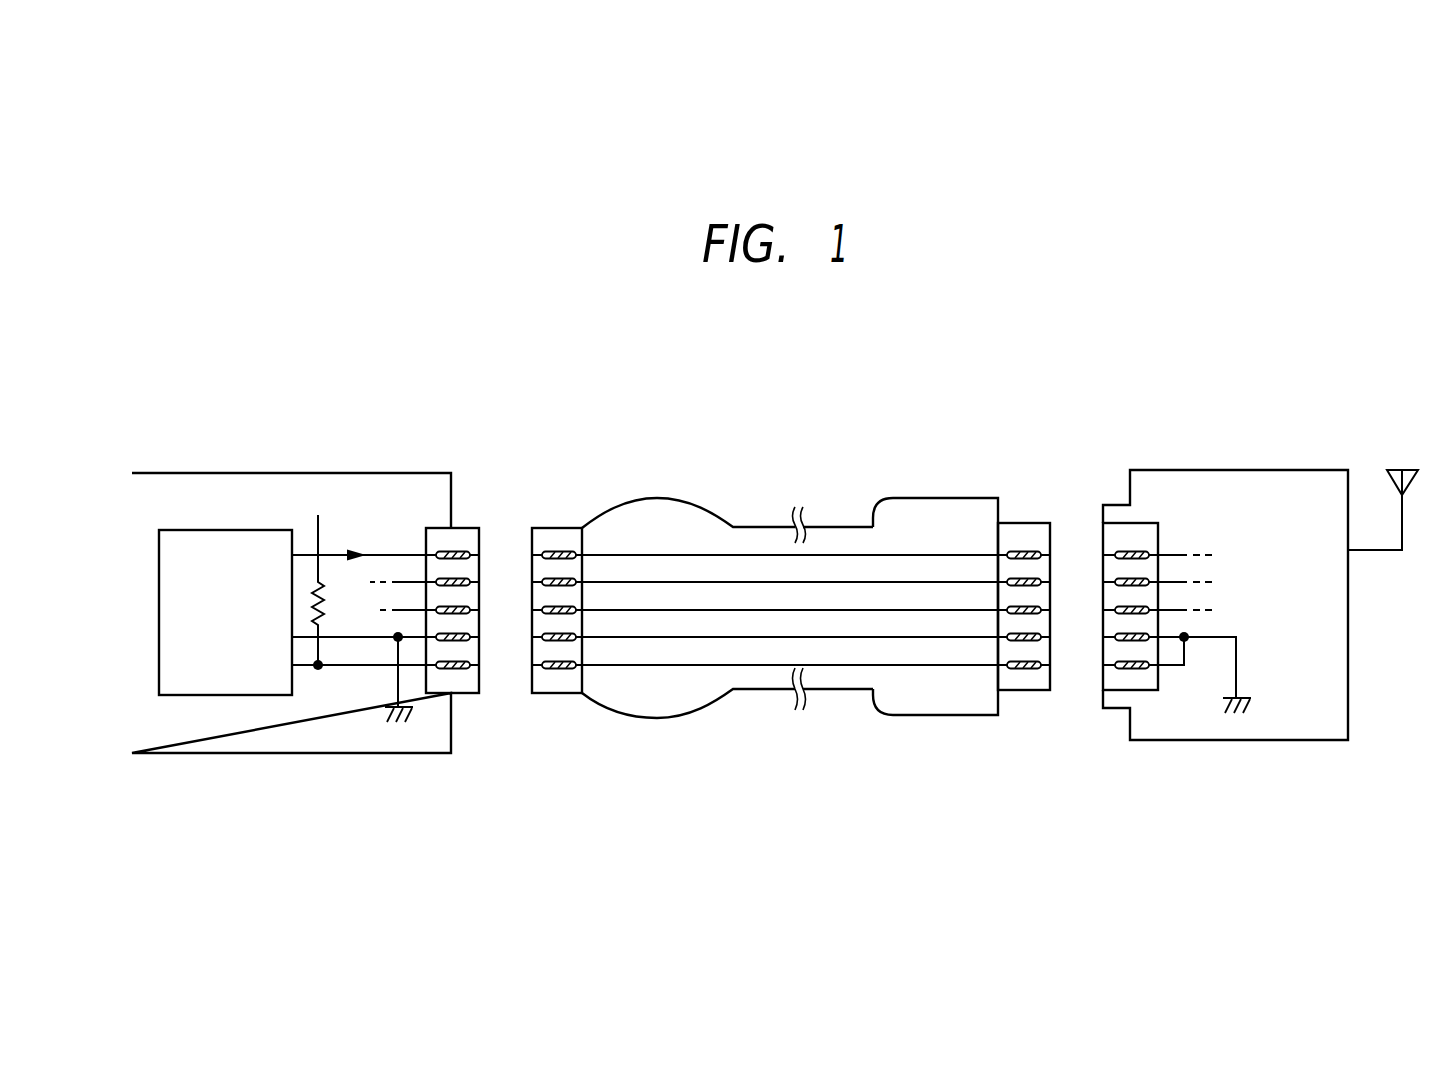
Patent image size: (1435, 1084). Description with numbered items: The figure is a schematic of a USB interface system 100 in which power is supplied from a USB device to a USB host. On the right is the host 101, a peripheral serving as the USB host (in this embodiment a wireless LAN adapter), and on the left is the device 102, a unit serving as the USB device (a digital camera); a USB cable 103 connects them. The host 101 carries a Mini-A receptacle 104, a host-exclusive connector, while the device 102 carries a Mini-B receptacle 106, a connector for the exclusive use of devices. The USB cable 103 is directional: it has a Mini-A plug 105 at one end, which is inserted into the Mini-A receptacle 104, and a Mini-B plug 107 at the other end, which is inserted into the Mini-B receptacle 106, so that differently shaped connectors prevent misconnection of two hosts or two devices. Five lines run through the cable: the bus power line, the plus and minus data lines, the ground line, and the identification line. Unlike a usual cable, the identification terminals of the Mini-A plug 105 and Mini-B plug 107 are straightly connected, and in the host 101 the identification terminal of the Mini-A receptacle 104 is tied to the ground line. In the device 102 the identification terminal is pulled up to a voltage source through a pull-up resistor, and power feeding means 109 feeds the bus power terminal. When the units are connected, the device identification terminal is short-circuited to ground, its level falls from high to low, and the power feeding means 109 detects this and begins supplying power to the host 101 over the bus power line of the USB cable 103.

The USB interface system 100 is at (888, 348).
The host 101 is at (1229, 458).
The device 102 is at (277, 462).
The USB cable 103 is at (766, 514).
The Mini-A receptacle 104 is at (1101, 538).
The Mini-A plug 105 is at (936, 516).
The Mini-B receptacle 106 is at (481, 542).
The Mini-B plug 107 is at (632, 513).
The power feeding means 109 is at (201, 696).